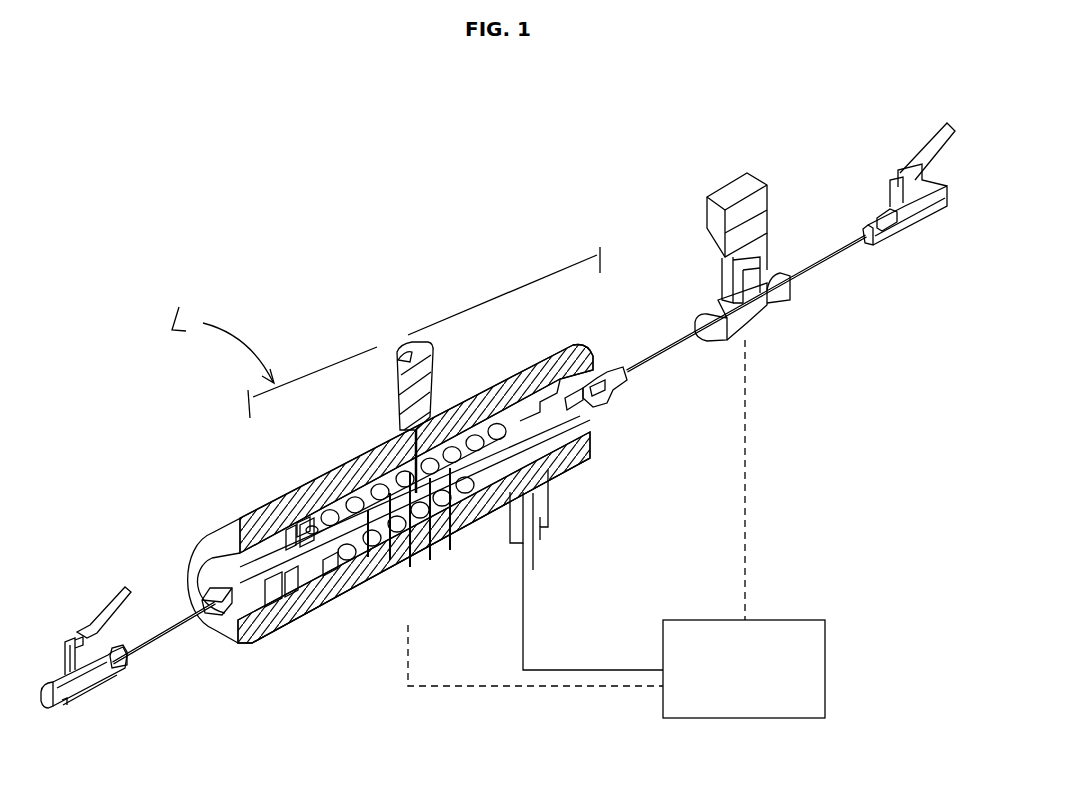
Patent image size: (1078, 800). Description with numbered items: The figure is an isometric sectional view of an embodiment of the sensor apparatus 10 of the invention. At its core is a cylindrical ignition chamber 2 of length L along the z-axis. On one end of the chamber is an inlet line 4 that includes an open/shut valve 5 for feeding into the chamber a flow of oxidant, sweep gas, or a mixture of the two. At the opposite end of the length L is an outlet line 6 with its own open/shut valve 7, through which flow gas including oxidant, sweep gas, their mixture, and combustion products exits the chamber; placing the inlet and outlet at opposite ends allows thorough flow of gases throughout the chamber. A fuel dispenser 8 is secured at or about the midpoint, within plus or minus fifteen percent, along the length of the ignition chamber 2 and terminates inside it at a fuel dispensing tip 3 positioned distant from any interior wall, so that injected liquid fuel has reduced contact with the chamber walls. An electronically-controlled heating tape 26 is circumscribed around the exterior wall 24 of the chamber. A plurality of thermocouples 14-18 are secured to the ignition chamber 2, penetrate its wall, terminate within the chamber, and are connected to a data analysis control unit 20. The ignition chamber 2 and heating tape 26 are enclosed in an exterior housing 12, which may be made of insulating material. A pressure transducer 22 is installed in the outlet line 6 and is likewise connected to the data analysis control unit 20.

The cylindrical ignition chamber 2 is at (512, 440).
The fuel dispensing tip 3 is at (413, 487).
The inlet line 4 is at (165, 642).
The open/shut valve 5 is at (87, 627).
The outlet line 6 is at (665, 349).
The open/shut valve 7 is at (902, 170).
The fuel dispenser 8 is at (403, 345).
The sensor apparatus 10 is at (455, 248).
The exterior housing 12 is at (303, 610).
The thermocouples 14-18 is at (450, 550).
The data analysis control unit 20 is at (616, 529).
The pressure transducer 22 is at (733, 185).
The exterior wall 24 is at (292, 537).
The heating tape 26 is at (471, 437).